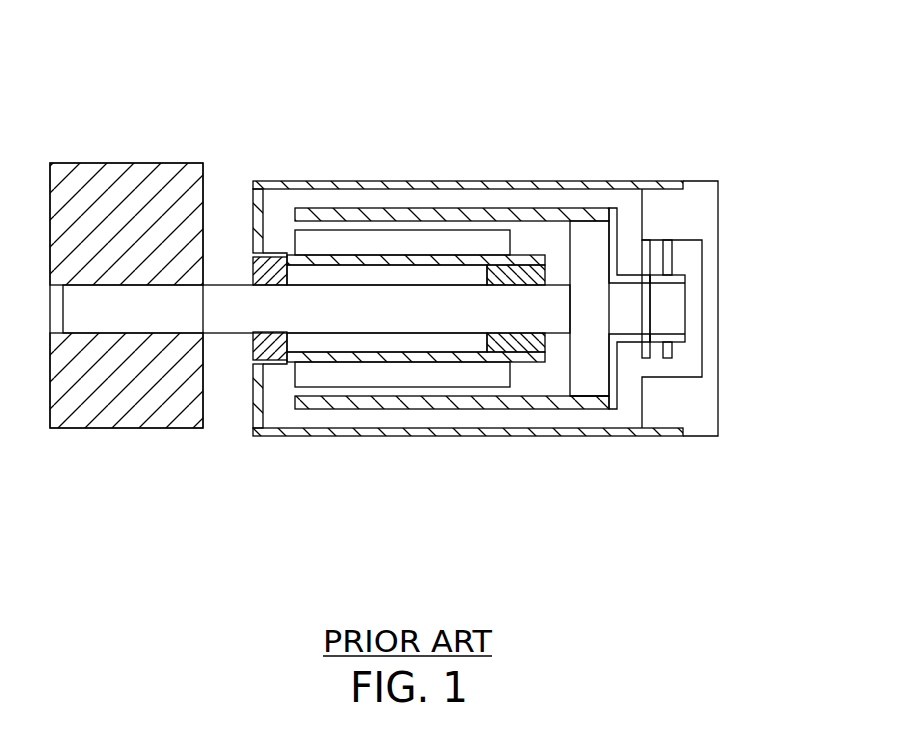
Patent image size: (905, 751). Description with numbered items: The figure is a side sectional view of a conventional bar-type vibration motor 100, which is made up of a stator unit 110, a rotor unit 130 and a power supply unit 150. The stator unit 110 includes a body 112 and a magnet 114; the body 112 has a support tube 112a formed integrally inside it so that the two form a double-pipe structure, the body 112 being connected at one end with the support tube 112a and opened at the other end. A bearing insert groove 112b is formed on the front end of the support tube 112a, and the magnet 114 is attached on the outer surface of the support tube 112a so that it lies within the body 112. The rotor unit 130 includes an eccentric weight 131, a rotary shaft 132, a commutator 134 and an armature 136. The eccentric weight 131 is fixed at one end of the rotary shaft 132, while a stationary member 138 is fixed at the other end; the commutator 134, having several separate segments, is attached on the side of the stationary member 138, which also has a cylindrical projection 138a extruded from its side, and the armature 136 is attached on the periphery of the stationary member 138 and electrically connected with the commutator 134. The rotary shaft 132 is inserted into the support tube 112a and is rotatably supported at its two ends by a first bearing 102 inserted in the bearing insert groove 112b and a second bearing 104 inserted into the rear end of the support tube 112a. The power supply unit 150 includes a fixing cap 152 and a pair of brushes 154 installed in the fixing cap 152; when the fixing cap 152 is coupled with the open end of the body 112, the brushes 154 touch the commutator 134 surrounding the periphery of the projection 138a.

The bar-type vibration motor 100 is at (537, 88).
The first bearing 102 is at (253, 362).
The second bearing 104 is at (547, 376).
The stator unit 110 is at (323, 178).
The body 112 is at (532, 185).
The support tube 112a is at (430, 362).
The bearing insert groove 112b is at (251, 257).
The magnet 114 is at (463, 248).
The rotor unit 130 is at (585, 212).
The eccentric weight 131 is at (141, 200).
The rotary shaft 132 is at (160, 316).
The commutator 134 is at (617, 380).
The armature 136 is at (388, 212).
The stationary member 138 is at (597, 388).
The cylindrical projection 138a is at (680, 308).
The power supply unit 150 is at (738, 193).
The fixing cap 152 is at (707, 400).
The brushes 154 is at (647, 262).